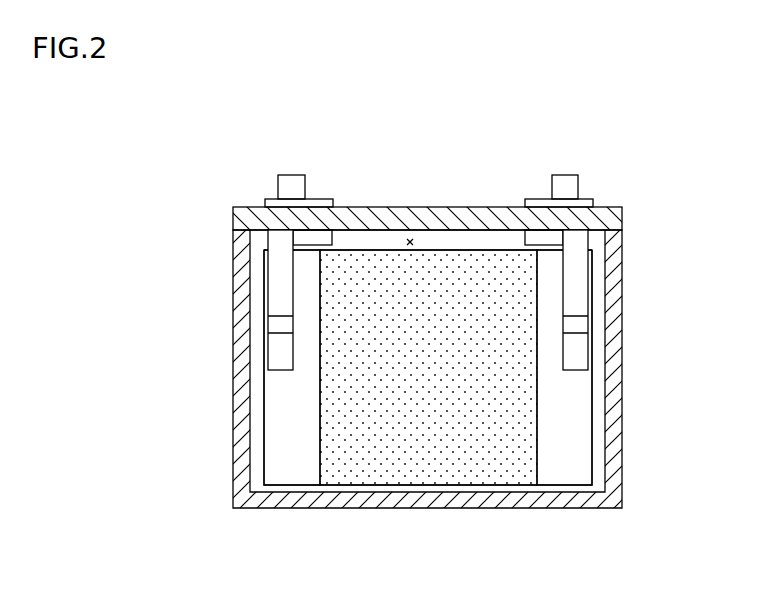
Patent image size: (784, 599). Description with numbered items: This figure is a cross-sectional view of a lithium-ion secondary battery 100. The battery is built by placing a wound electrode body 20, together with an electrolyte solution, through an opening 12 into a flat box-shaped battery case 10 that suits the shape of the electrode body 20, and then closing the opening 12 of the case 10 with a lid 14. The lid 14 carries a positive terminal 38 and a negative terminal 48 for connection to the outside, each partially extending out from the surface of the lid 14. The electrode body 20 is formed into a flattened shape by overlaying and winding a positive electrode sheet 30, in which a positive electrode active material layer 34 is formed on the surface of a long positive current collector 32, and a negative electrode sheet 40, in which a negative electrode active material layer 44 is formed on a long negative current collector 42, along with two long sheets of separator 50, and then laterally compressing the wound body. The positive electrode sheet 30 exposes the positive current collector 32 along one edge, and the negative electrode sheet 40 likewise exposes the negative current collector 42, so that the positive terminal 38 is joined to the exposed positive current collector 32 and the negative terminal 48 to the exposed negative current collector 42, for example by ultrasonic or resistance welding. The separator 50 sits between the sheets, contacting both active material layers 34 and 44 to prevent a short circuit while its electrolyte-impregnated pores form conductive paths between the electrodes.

The lithium-ion secondary battery 100 is at (205, 96).
The battery case 10 is at (627, 455).
The opening 12 is at (410, 240).
The lid 14 is at (368, 205).
The wound electrode body 20 is at (450, 247).
The positive electrode sheet 30 is at (306, 380).
The positive current collector 32 is at (292, 475).
The positive electrode active material layer 34 is at (377, 453).
The positive terminal 38 is at (289, 181).
The negative electrode sheet 40 is at (568, 378).
The negative current collector 42 is at (560, 477).
The negative electrode active material layer 44 is at (507, 452).
The negative terminal 48 is at (565, 178).
The separator 50 is at (443, 468).